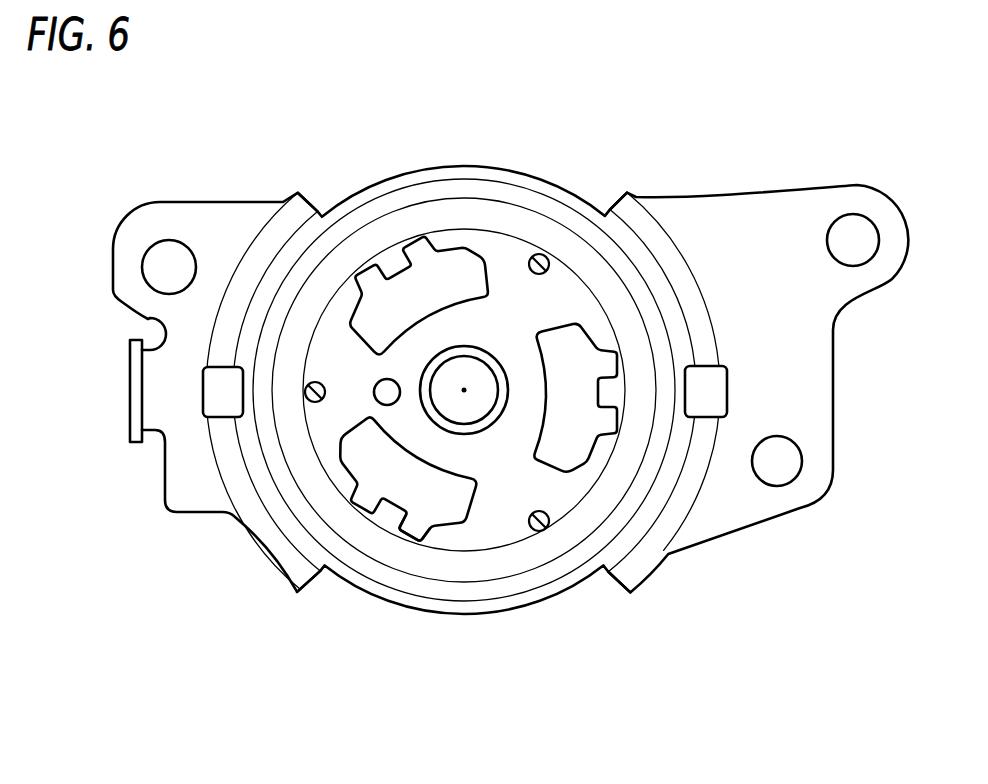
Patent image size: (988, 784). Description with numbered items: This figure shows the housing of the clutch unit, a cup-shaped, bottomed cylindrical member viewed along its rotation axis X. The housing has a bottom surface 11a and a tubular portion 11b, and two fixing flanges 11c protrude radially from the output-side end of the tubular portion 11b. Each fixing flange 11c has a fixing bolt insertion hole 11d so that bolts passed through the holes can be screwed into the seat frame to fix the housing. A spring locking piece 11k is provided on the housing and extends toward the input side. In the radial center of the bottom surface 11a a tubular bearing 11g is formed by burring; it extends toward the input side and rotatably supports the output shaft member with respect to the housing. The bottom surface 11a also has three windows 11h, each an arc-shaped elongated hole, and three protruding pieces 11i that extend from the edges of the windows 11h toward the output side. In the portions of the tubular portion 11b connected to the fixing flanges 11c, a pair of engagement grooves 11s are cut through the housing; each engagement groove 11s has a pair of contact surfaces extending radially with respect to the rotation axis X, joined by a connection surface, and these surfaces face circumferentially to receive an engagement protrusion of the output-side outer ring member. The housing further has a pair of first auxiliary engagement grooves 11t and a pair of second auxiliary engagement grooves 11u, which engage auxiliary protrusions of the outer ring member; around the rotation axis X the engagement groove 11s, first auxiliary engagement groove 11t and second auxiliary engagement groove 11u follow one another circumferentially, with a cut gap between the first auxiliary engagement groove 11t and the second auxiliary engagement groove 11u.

The bottom surface 11a is at (504, 283).
The tubular portion 11b is at (693, 508).
The fixing flange 11c is at (798, 366).
The fixing bolt insertion hole 11d is at (866, 220).
The bearing 11g is at (473, 363).
The window 11h is at (470, 527).
The protruding piece 11i is at (405, 518).
The spring locking piece 11k is at (128, 378).
The engagement groove 11s is at (705, 416).
The first auxiliary engagement groove 11t is at (608, 208).
The second auxiliary engagement groove 11u is at (320, 206).
The rotation axis X is at (464, 391).